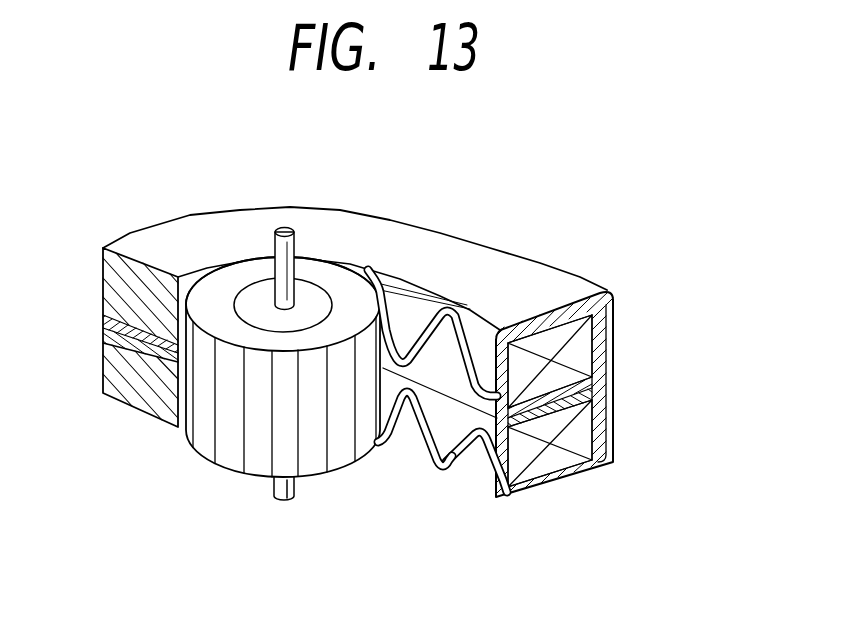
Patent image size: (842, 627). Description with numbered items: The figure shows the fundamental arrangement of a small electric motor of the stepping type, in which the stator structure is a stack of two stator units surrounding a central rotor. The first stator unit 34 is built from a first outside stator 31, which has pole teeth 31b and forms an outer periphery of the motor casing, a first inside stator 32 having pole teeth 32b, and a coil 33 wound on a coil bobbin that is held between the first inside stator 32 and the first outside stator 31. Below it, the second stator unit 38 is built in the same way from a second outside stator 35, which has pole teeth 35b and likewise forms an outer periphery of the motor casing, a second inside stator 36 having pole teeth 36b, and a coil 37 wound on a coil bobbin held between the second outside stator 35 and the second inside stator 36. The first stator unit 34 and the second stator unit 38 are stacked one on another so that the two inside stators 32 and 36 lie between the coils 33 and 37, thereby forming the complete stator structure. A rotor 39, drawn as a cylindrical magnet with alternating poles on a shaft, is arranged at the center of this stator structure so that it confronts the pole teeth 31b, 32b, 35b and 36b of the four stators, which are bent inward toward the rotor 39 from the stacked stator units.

The first outside stator 31 is at (606, 301).
The pole teeth 31b is at (407, 340).
The first inside stator 32 is at (603, 387).
The pole teeth 32b is at (460, 313).
The coil 33 is at (603, 337).
The first stator unit 34 is at (735, 200).
The second outside stator 35 is at (603, 456).
The pole teeth 35b is at (415, 447).
The second inside stator 36 is at (603, 396).
The pole teeth 36b is at (462, 437).
The coil 37 is at (603, 428).
The second stator unit 38 is at (735, 352).
The rotor 39 is at (296, 468).